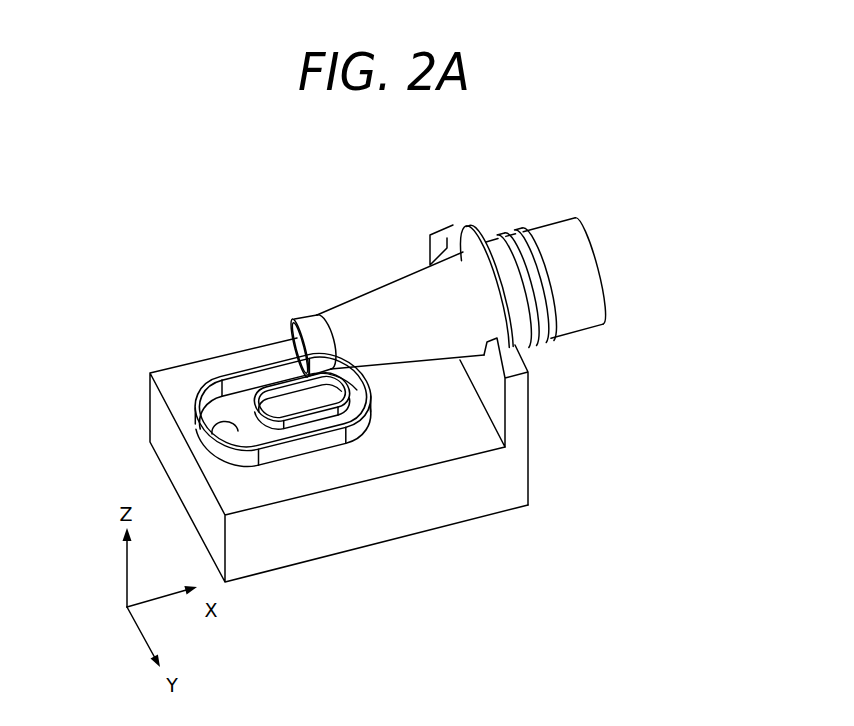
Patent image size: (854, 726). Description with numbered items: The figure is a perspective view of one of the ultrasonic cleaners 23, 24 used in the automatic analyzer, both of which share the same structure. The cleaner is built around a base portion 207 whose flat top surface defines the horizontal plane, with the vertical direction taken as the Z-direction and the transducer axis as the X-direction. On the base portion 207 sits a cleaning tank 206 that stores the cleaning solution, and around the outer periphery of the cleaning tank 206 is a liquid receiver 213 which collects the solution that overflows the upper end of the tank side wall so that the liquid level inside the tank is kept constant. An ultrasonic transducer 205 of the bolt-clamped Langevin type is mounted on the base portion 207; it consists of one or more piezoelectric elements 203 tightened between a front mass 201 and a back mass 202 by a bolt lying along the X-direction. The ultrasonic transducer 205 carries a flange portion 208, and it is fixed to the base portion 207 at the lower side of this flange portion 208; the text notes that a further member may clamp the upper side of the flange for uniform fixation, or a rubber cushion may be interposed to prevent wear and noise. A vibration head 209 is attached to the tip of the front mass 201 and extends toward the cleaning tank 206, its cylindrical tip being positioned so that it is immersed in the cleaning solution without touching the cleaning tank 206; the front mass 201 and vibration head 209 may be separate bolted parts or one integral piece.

The ultrasonic cleaner 23 is at (136, 176).
The ultrasonic cleaner 24 is at (165, 176).
The front mass 201 is at (383, 350).
The back mass 202 is at (577, 320).
The piezoelectric element 203 is at (532, 376).
The ultrasonic transducer 205 is at (703, 419).
The cleaning tank 206 is at (285, 383).
The base portion 207 is at (367, 525).
The flange portion 208 is at (468, 220).
The vibration head 209 is at (300, 335).
The liquid receiver 213 is at (237, 432).